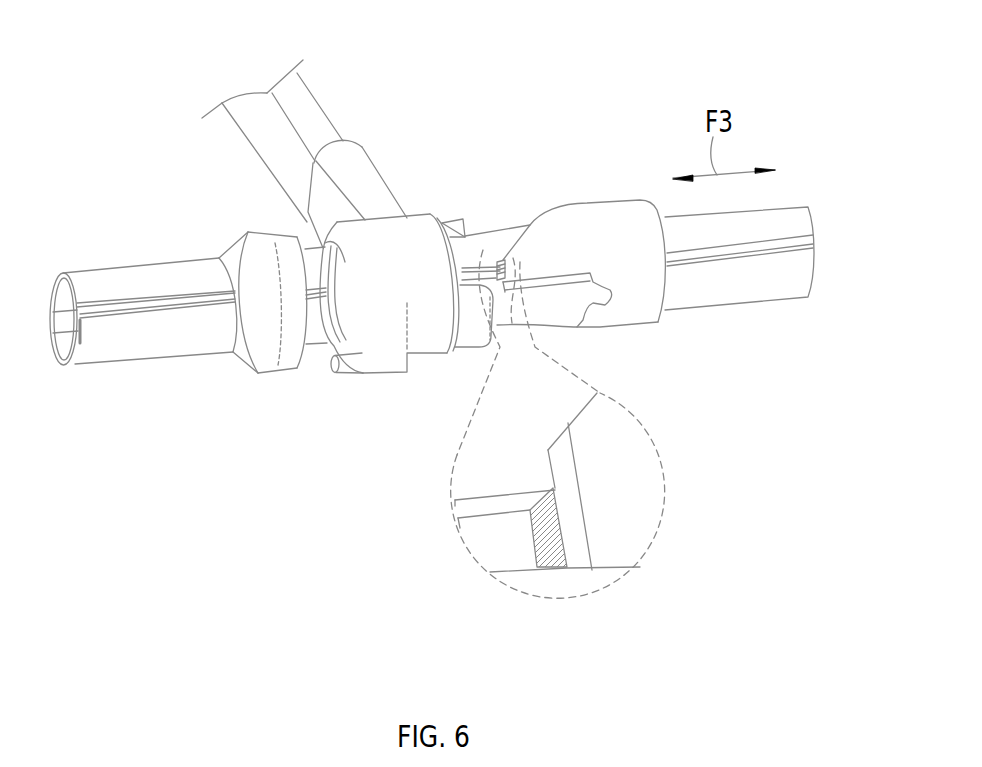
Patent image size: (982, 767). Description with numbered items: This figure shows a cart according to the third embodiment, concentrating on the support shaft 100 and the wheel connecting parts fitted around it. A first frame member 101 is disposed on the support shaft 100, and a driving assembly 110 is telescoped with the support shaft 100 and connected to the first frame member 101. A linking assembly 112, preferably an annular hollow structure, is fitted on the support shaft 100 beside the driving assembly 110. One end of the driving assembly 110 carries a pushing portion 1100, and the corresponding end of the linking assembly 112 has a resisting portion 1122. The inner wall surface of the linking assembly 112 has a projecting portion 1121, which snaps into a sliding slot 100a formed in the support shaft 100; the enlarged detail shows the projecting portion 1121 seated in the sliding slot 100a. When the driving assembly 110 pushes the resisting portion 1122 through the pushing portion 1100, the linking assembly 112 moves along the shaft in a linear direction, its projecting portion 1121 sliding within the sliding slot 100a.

The support shaft 100 is at (110, 275).
The first frame member 101 is at (272, 160).
The driving assembly 110 is at (367, 178).
The pushing portion 1100 is at (455, 233).
The linking assembly 112 is at (618, 212).
The resisting portion 1122 is at (522, 257).
The sliding slot 100a is at (741, 257).
The projecting portion 1121 is at (547, 570).